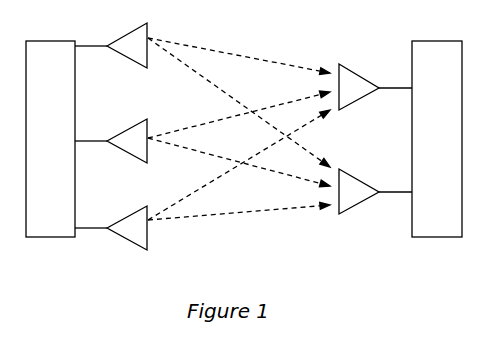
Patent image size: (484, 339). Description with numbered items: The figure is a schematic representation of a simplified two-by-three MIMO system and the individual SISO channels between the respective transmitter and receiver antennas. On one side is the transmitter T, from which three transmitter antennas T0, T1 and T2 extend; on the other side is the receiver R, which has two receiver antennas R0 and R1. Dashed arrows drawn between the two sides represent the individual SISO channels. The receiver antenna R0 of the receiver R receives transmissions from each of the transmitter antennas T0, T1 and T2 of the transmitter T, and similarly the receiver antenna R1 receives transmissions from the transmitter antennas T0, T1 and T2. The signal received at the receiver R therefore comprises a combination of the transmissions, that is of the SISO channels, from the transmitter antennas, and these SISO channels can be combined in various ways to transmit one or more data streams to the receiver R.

The transmitter T is at (58, 150).
The transmitter antenna T0 is at (111, 45).
The transmitter antenna T1 is at (111, 140).
The transmitter antenna T2 is at (111, 227).
The receiver R is at (411, 150).
The receiver antenna R0 is at (375, 87).
The receiver antenna R1 is at (375, 191).